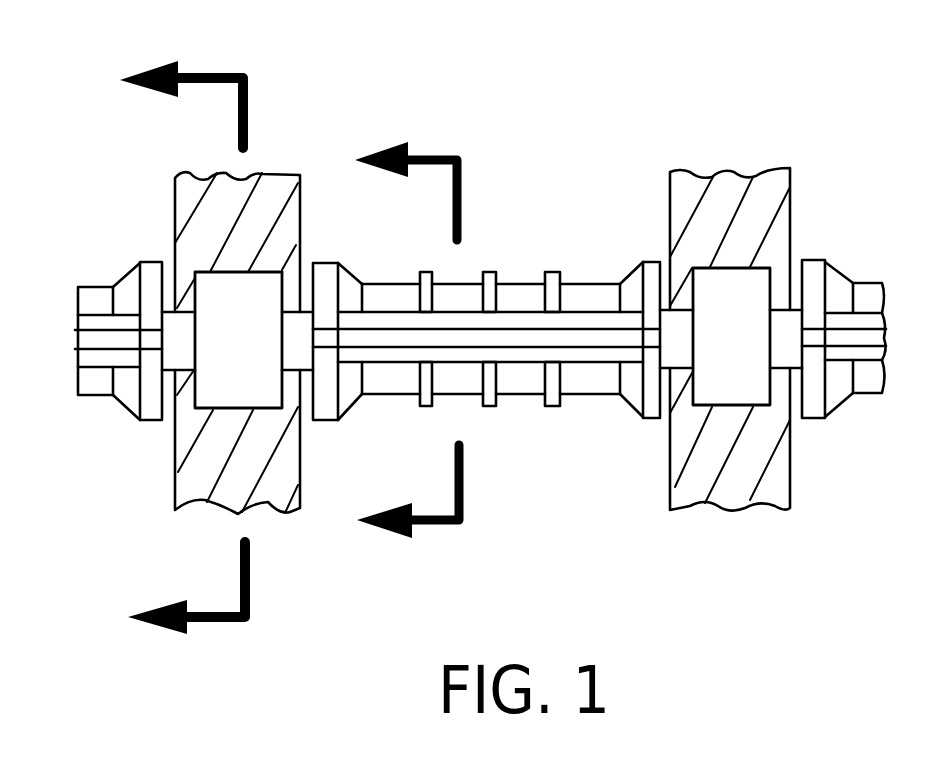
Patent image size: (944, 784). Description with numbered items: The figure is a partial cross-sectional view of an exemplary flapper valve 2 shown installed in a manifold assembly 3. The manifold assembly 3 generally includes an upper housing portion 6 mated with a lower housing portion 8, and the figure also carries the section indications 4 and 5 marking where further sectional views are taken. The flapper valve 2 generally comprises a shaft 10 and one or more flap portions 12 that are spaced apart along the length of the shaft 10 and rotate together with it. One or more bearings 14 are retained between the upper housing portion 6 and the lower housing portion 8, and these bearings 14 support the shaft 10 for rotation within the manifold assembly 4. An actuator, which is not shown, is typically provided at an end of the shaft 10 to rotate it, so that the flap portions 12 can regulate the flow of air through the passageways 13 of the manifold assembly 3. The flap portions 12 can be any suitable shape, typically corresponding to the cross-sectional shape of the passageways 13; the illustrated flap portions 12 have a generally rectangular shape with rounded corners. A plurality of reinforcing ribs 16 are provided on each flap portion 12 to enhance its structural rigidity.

The flapper valve 2 is at (390, 300).
The manifold assembly 3 is at (128, 182).
The manifold assembly 4 is at (182, 349).
The section line 5- 5 is at (407, 339).
The upper housing portion 6 is at (773, 190).
The lower housing portion 8 is at (778, 467).
The shaft 10 is at (787, 340).
The flap portions 12 is at (595, 337).
The passageways 13 is at (535, 476).
The bearings 14 is at (263, 297).
The reinforcing ribs 16 is at (498, 270).